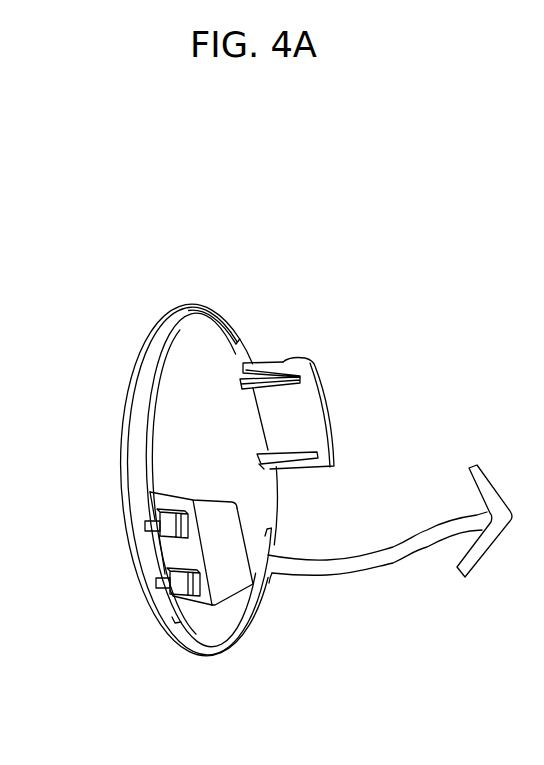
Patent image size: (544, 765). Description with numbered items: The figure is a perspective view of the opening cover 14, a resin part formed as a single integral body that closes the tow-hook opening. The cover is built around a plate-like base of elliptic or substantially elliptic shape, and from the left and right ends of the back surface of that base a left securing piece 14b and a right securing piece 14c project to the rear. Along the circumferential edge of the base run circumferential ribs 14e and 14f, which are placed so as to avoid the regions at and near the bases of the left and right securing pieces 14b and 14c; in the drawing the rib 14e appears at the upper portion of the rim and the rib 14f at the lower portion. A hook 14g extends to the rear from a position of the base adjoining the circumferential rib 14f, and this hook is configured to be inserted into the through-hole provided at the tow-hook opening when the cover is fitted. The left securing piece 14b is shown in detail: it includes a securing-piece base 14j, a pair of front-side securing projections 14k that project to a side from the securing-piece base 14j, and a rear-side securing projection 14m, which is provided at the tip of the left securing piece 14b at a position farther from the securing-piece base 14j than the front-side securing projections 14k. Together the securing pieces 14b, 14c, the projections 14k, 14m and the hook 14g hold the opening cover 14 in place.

The opening cover 14 is at (140, 364).
The left securing piece 14b is at (181, 492).
The right securing piece 14c is at (327, 398).
The circumferential rib 14e is at (210, 306).
The circumferential rib 14f is at (222, 656).
The hook 14g is at (368, 567).
The securing-piece base 14j is at (172, 556).
The front-side securing projections 14k is at (163, 513).
The rear-side securing projection 14m is at (231, 588).